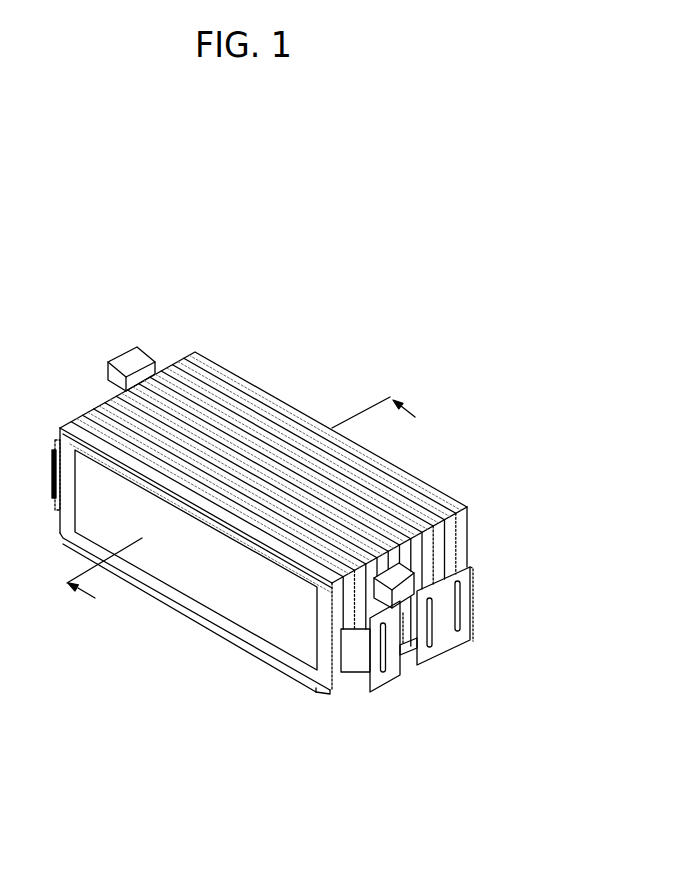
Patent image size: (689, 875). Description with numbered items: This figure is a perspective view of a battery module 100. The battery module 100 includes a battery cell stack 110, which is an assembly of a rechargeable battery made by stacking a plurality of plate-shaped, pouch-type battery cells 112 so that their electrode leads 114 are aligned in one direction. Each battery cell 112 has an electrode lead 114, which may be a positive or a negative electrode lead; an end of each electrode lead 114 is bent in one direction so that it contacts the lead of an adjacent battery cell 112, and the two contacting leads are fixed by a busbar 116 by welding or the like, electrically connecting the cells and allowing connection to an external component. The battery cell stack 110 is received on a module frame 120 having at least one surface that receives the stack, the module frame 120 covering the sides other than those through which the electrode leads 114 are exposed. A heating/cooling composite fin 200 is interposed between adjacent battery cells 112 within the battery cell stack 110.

The battery module 100 is at (172, 265).
The battery cell stack 110 is at (248, 366).
The battery cell 112 is at (435, 494).
The electrode lead 114 is at (358, 666).
The busbar 116 is at (467, 590).
The module frame 120 is at (313, 689).
The heating/cooling composite fin 200 is at (423, 563).